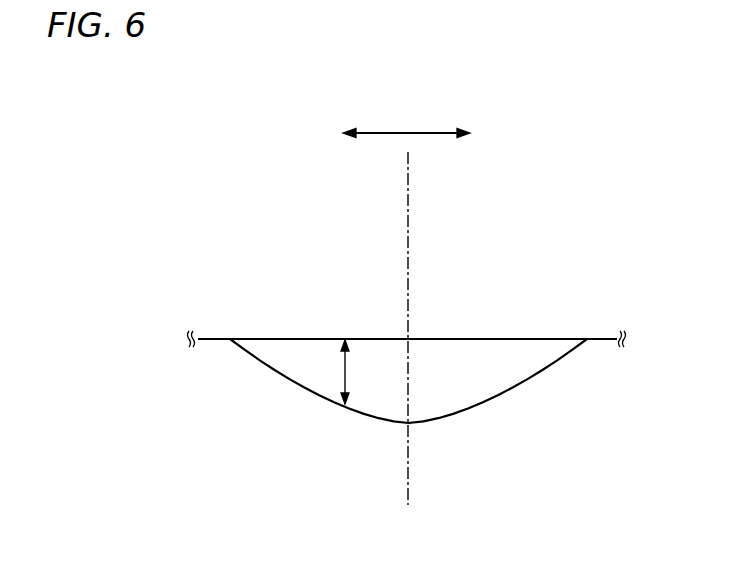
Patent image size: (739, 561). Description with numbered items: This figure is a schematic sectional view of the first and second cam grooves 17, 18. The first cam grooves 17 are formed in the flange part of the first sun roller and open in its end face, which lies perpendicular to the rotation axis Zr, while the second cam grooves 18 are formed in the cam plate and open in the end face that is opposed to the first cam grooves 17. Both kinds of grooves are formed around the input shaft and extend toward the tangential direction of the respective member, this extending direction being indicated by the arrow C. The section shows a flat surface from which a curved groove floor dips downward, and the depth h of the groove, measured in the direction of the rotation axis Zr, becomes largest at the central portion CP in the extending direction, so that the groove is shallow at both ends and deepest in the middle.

The first cam grooves 17 is at (407, 342).
The second cam grooves 18 is at (528, 318).
The arrow C is at (403, 132).
The central portion CP is at (410, 422).
The depth h is at (347, 384).
The rotation axis Zr is at (408, 339).